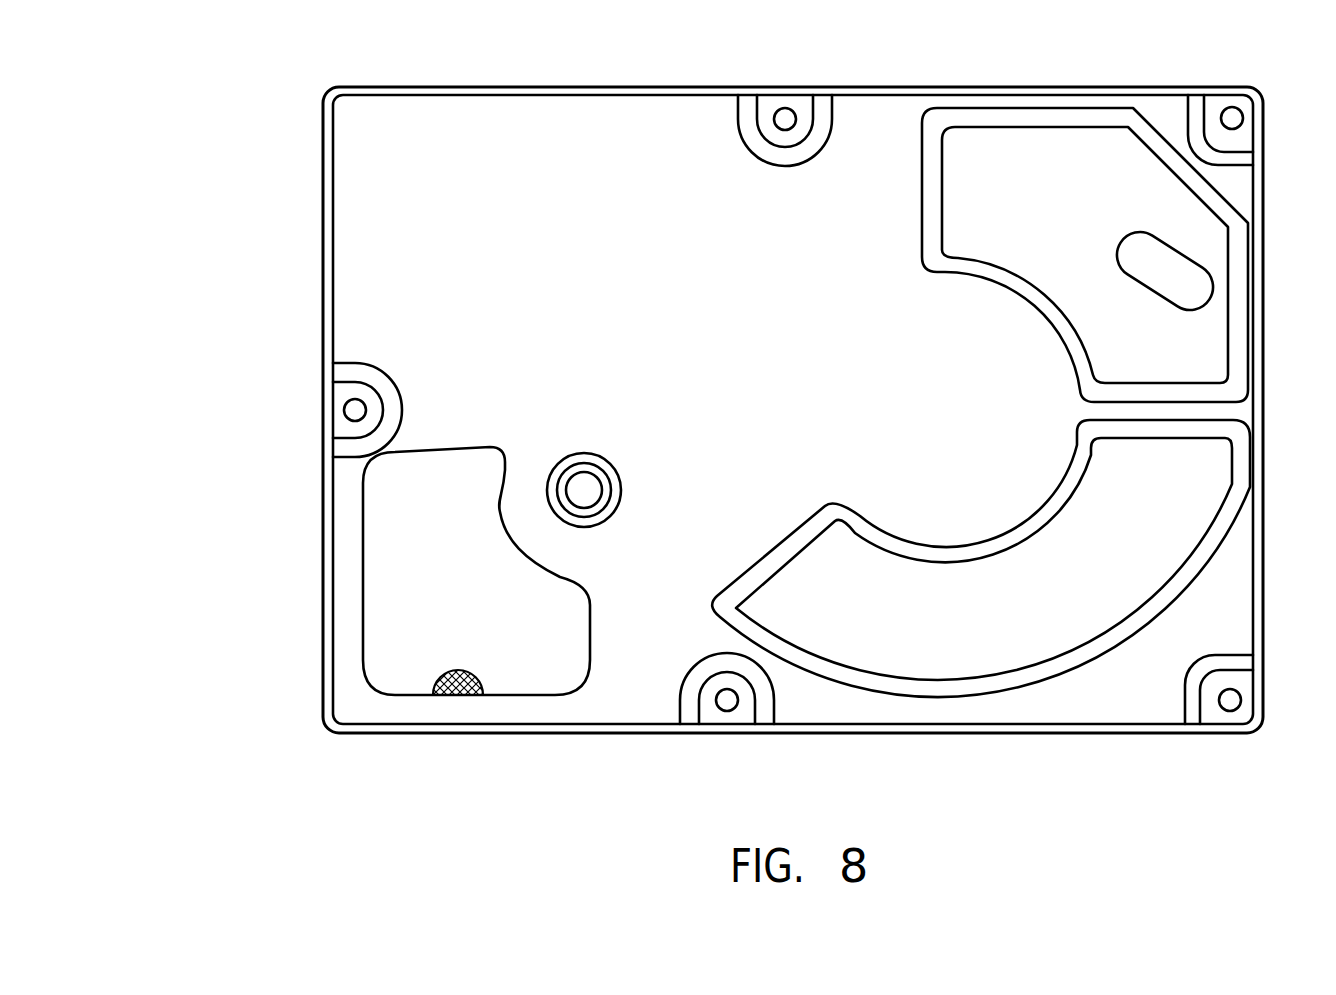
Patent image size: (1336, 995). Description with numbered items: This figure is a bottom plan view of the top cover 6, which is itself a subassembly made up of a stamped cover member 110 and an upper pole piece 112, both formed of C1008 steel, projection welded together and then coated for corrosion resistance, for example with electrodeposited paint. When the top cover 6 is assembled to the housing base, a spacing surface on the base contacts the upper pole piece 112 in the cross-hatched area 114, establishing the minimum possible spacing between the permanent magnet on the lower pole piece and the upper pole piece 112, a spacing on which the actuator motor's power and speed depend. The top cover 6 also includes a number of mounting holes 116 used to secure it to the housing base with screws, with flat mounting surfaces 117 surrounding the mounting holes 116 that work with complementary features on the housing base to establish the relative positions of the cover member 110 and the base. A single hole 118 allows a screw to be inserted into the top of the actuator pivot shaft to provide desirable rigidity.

The top cover 6 is at (203, 366).
The cover member 110 is at (500, 117).
The upper pole piece 112 is at (405, 587).
The cross-hatched area 114 is at (452, 694).
The mounting holes 116 is at (785, 110).
The flat mounting surfaces 117 is at (805, 105).
The single hole 118 is at (587, 483).